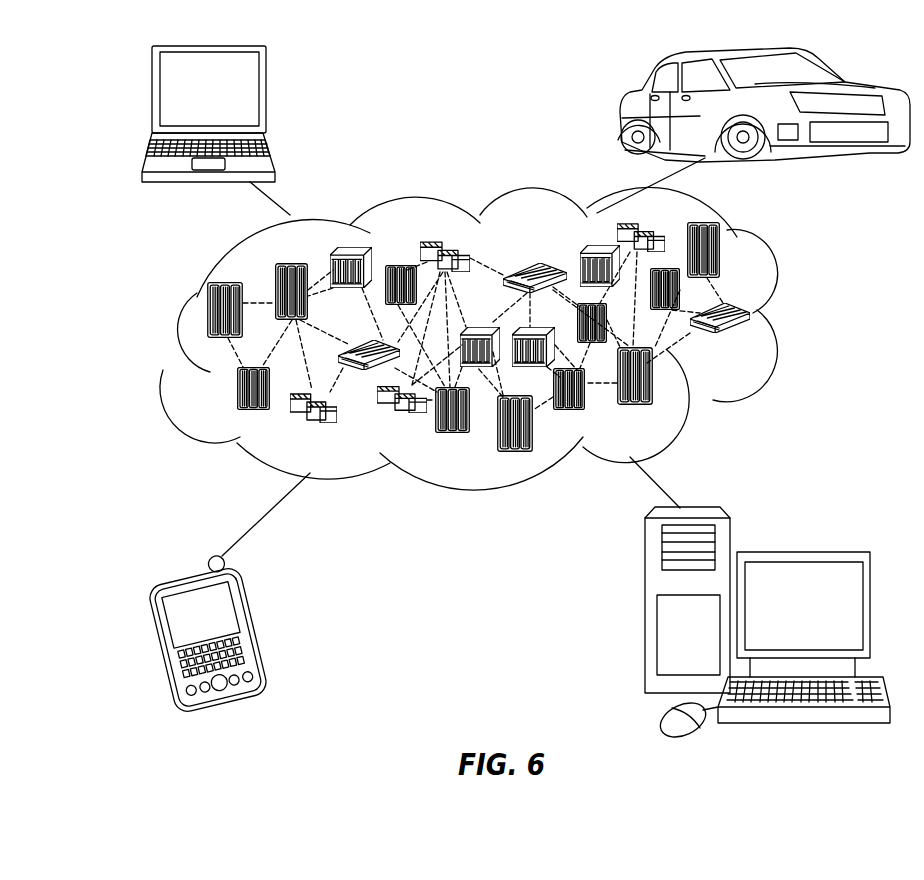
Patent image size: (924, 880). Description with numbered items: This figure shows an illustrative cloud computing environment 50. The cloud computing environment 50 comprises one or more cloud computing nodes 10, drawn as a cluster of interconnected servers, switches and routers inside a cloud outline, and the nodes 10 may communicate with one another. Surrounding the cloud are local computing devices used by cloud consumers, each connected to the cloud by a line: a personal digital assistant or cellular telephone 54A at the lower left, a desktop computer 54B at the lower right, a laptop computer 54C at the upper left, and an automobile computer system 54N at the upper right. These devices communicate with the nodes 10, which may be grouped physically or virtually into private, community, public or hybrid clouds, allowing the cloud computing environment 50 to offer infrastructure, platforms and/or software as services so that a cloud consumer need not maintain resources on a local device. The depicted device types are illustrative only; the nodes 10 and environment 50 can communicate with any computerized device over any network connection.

The cloud computing nodes 10 is at (753, 343).
The cloud computing environment 50 is at (800, 317).
The personal digital assistant or cellular telephone 54A is at (256, 628).
The desktop computer 54B is at (800, 552).
The laptop computer 54C is at (266, 97).
The automobile computer system 54N is at (617, 110).